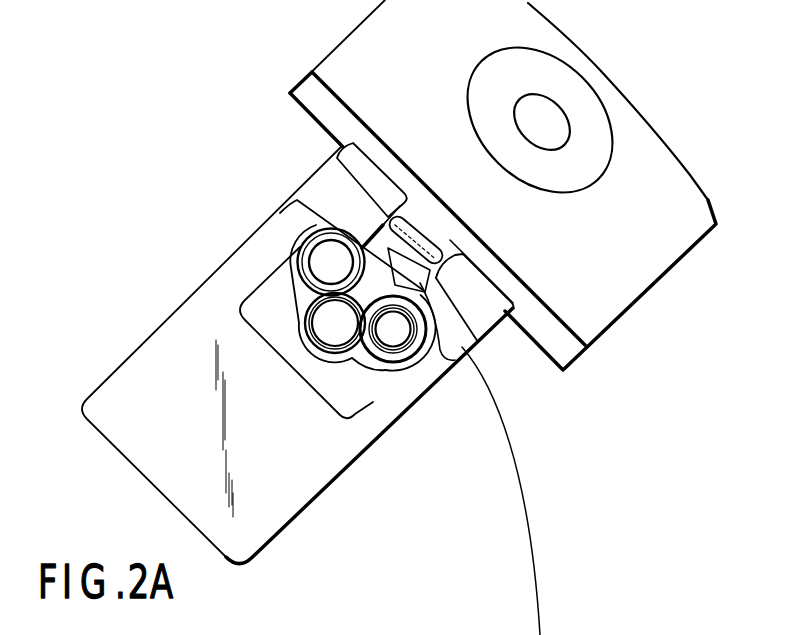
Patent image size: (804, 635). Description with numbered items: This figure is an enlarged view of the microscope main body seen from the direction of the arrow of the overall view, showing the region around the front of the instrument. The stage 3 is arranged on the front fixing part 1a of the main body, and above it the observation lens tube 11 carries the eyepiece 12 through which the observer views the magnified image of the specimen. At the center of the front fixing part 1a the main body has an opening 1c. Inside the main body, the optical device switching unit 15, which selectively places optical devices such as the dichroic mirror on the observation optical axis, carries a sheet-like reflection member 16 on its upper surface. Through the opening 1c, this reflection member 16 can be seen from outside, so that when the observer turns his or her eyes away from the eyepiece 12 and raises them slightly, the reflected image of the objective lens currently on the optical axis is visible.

The stage 3 is at (360, 58).
The observation lens tube 11 is at (289, 473).
The front fixing part 1a is at (479, 348).
The opening 1c is at (298, 198).
The optical device switching unit 15 is at (340, 157).
The sheet-like reflection member 16 is at (437, 357).
The eyepiece 12 is at (372, 363).